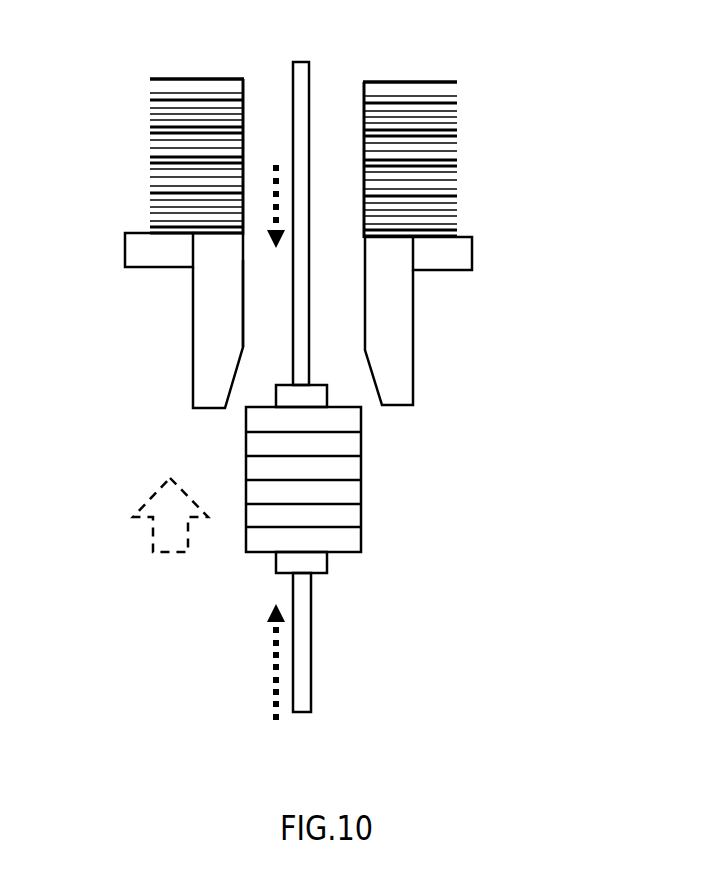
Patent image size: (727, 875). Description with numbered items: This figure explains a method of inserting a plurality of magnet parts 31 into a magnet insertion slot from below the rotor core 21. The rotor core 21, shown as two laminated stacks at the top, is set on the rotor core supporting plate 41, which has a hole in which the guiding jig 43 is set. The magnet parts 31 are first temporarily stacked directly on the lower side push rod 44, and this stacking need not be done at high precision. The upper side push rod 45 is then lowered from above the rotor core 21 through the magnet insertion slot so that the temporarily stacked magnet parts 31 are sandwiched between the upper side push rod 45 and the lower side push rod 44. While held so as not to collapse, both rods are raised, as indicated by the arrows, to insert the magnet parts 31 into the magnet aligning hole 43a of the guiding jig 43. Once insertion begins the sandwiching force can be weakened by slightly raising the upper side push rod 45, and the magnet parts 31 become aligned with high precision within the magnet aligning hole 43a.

The rotor core 21 is at (152, 178).
The rotor core supporting plate 41 is at (125, 255).
The guiding jig 43 is at (413, 348).
The magnet aligning hole 43a is at (263, 283).
The upper side push rod 45 is at (309, 98).
The magnet parts 31 is at (363, 512).
The lower side push rod 44 is at (311, 657).